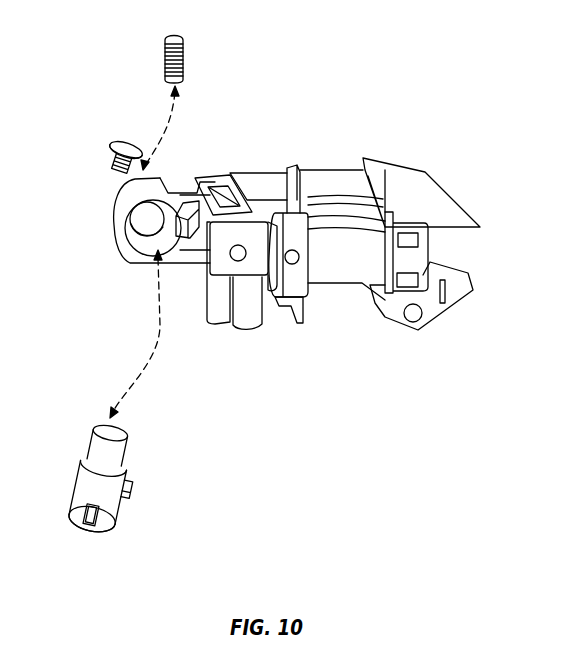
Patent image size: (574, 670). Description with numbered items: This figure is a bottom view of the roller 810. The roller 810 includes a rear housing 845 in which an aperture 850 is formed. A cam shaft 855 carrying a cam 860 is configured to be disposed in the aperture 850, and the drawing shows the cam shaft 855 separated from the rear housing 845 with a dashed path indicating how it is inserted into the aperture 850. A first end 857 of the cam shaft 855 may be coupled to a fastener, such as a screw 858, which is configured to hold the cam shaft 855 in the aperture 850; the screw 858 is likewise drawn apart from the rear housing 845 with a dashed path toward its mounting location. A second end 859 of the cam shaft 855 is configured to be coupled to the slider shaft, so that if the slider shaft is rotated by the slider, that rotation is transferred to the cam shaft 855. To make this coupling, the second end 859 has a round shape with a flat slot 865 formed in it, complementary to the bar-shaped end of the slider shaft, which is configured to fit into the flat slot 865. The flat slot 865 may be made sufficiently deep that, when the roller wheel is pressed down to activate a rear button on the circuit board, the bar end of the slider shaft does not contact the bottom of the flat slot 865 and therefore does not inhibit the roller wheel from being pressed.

The roller 810 is at (271, 218).
The rear housing 845 is at (139, 217).
The aperture 850 is at (142, 258).
The cam shaft 855 is at (109, 506).
The first end 857 is at (112, 152).
The screw 858 is at (185, 52).
The second end 859 is at (91, 525).
The cam 860 is at (127, 489).
The flat slot 865 is at (91, 515).